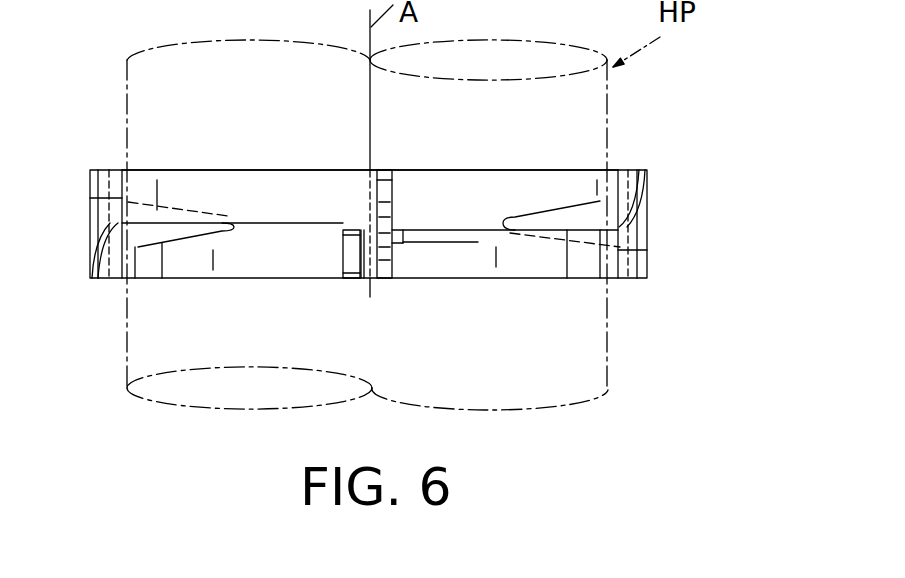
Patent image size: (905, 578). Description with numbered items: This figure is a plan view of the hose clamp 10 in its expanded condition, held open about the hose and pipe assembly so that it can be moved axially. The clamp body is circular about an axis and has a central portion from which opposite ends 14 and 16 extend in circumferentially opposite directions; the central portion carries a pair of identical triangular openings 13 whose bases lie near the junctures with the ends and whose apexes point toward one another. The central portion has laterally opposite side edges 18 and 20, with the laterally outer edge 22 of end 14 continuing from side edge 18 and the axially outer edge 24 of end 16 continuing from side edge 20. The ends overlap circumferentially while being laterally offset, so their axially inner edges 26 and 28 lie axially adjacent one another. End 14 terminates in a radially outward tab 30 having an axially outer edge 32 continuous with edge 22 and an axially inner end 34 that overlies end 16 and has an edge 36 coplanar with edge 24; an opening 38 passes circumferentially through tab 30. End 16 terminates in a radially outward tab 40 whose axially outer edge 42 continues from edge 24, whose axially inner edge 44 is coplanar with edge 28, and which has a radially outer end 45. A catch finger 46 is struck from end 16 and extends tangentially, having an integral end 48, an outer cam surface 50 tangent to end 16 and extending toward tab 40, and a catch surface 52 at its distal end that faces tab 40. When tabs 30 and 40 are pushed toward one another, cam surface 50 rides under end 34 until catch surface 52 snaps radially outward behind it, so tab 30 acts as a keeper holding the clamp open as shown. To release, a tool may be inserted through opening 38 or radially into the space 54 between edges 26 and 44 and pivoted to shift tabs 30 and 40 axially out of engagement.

The hose clamp 10 is at (686, 140).
The triangular openings 13 is at (138, 247).
The end 14 is at (235, 167).
The end 16 is at (547, 285).
The side edge 18 is at (487, 170).
The side edge 20 is at (197, 280).
The laterally outer edge 22 is at (203, 168).
The axially outer edge 24 is at (523, 278).
The axially inner edge 26 is at (262, 222).
The axially inner edge 28 is at (522, 222).
The tab 30 is at (390, 165).
The axially outer edge 32 is at (378, 170).
The axially inner end 34 is at (393, 263).
The edge 36 is at (383, 280).
The opening 38 is at (395, 193).
The tab 40 is at (338, 270).
The axially outer edge 42 is at (350, 278).
The axially inner edge 44 is at (362, 232).
The radially outer end 45 is at (343, 242).
The finger 46 is at (430, 243).
The end 48 is at (475, 237).
The outer cam surface 50 is at (447, 239).
The catch surface 52 is at (400, 228).
The space 54 is at (363, 231).